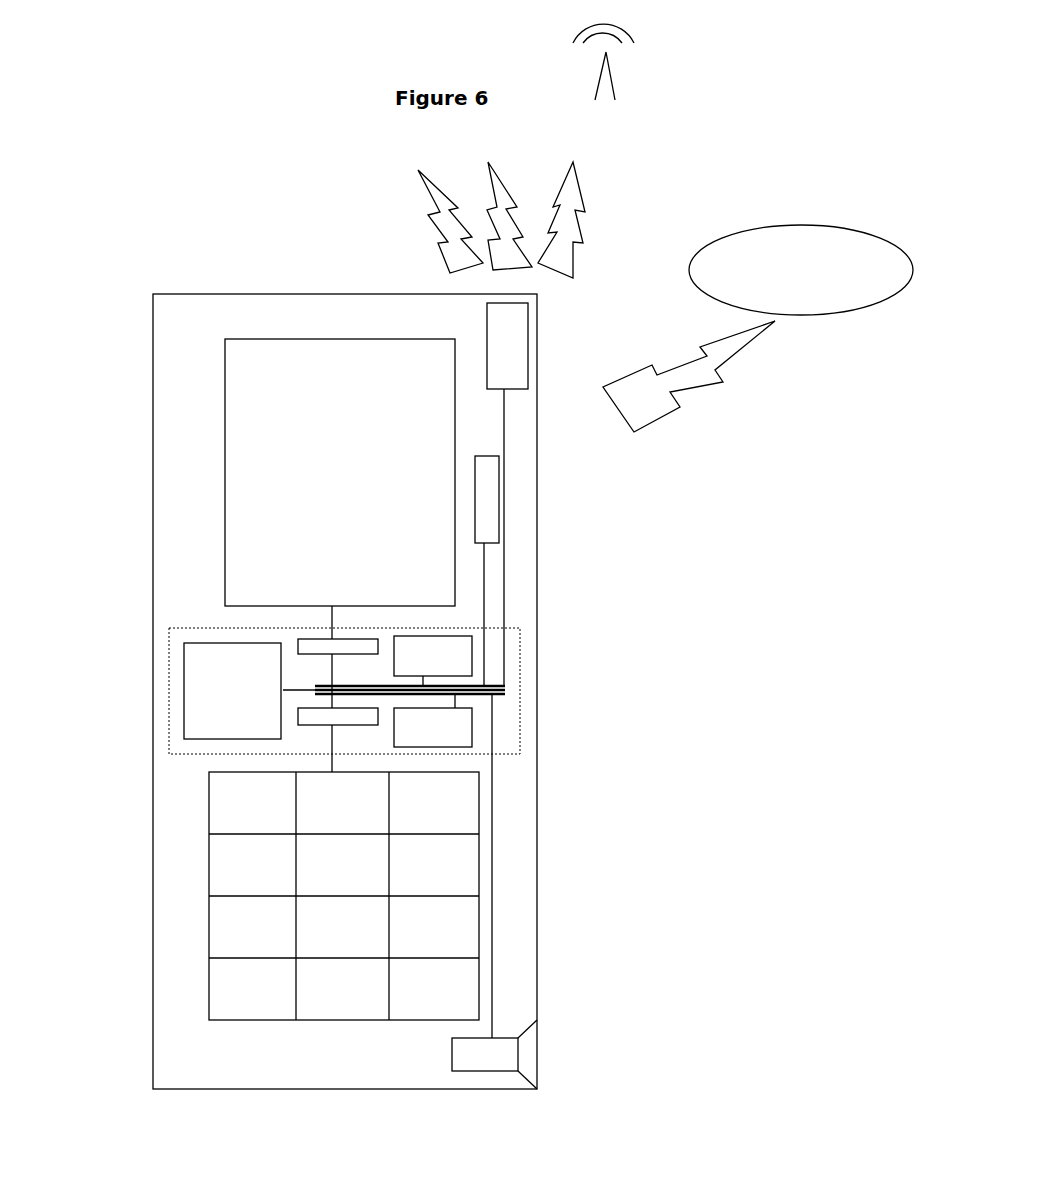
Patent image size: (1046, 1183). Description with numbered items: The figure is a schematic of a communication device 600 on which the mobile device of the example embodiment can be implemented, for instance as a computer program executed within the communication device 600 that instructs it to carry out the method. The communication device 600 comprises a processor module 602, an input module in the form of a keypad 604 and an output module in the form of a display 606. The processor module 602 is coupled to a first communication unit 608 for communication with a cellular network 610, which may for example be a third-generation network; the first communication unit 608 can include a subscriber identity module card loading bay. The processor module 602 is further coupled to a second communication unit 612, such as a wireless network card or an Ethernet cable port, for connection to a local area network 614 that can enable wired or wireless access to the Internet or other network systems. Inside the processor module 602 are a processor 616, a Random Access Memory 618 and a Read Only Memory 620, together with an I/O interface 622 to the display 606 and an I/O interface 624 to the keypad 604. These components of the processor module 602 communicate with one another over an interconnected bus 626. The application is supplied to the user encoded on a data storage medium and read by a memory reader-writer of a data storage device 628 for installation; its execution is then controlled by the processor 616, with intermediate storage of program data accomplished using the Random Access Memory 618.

The communication device 600 is at (123, 1065).
The processor module 602 is at (522, 661).
The keypad 604 is at (227, 875).
The display 606 is at (283, 365).
The first communication unit 608 is at (508, 380).
The cellular network 610 is at (633, 83).
The second communication unit 612 is at (487, 527).
The local area network 614 is at (804, 307).
The processor 616 is at (227, 685).
The Random Access Memory (RAM) 618 is at (444, 651).
The Read Only Memory (ROM) 620 is at (445, 715).
The I/O interface 622 is at (313, 650).
The I/O interface 624 is at (332, 715).
The interconnected bus 626 is at (503, 690).
The data storage device 628 is at (457, 1065).